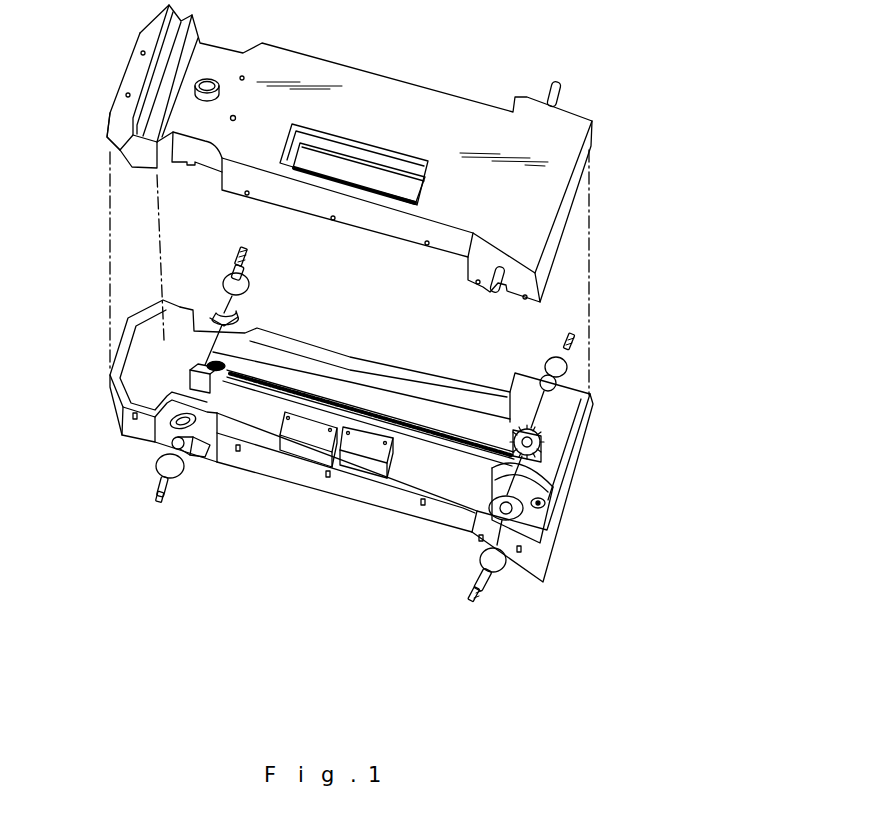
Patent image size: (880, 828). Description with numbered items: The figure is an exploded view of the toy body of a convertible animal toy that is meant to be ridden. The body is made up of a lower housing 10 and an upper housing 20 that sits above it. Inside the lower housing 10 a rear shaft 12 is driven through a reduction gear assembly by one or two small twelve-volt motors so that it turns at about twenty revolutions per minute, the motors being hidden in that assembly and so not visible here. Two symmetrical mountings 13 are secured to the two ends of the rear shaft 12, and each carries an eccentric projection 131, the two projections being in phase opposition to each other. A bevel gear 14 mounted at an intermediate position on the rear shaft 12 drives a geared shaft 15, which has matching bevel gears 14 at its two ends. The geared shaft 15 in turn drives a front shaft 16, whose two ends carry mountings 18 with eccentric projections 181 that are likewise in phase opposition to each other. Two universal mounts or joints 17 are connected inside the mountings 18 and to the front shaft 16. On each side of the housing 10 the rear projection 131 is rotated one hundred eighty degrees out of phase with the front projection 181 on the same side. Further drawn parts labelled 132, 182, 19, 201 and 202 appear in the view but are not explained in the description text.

The lower housing 10 is at (380, 503).
The rear shaft 12 is at (575, 437).
The mountings 13 is at (567, 368).
The eccentric projections 131 is at (578, 353).
The threaded pin 132 is at (575, 333).
The bevel gear 14 is at (190, 357).
The geared shaft 15 is at (363, 408).
The front shaft 16 is at (123, 422).
The universal mounts or joints 17 is at (240, 318).
The mountings 18 is at (249, 288).
The eccentric projections 181 is at (246, 264).
The threaded end 182 is at (248, 246).
The circuit blocks 19 is at (357, 448).
The upper housing 20 is at (390, 96).
The locating pin 201 is at (567, 84).
The cover end block 202 is at (116, 122).